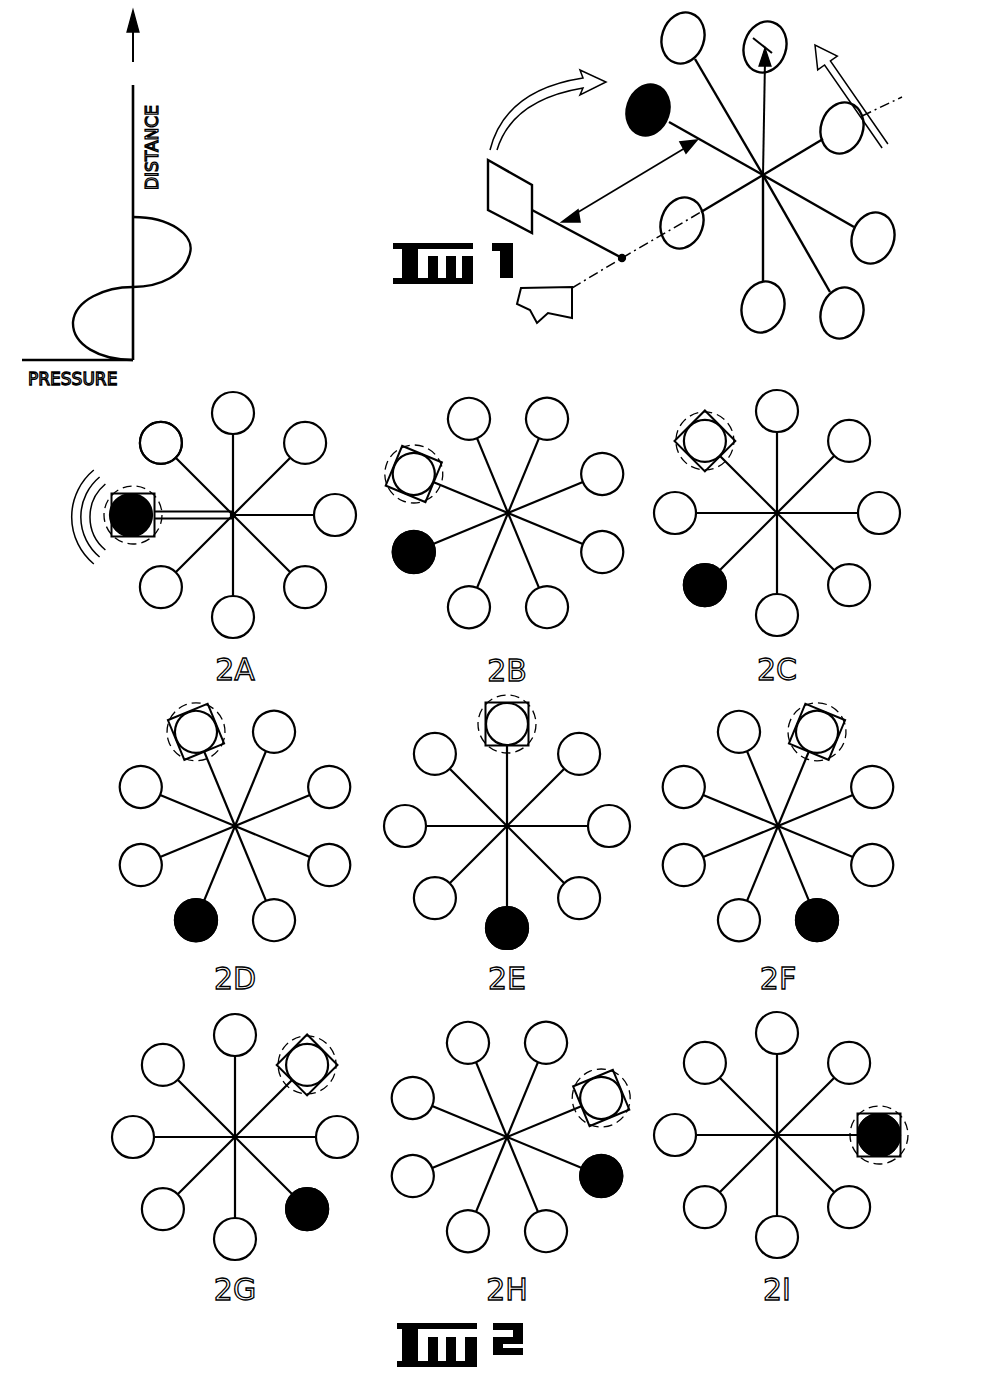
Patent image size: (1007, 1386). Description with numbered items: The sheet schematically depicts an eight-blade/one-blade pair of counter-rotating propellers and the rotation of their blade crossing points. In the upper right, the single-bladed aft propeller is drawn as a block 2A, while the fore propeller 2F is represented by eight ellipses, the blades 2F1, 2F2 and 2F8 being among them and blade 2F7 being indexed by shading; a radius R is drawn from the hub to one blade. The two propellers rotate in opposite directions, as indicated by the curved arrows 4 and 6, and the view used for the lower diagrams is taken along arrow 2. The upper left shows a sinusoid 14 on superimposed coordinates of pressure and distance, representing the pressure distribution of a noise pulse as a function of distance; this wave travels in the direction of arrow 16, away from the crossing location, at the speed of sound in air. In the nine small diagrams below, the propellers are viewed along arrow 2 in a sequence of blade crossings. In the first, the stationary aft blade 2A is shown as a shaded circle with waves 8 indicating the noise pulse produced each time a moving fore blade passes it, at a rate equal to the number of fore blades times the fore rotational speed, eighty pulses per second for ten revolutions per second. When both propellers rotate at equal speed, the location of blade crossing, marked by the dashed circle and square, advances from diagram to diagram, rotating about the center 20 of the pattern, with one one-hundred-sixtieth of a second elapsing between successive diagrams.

In FIG. 1, the arrow 16 is at (132, 45).
In FIG. 1, the sinusoid 14 is at (191, 253).
In FIG. 1, the arrow 4 is at (492, 118).
In FIG. 1, the aft propeller 2A is at (522, 173).
In FIG. 2, the aft propeller 2A is at (110, 540).
In FIG. 1, the fore propeller blade 2F8 is at (663, 49).
In FIG. 2, the fore propeller blade 2F8 is at (158, 421).
In FIG. 1, the fore propeller blade 2F7 is at (637, 131).
In FIG. 1, the fore propeller blade 2F1 is at (786, 57).
In FIG. 1, the fore propeller blade 2F2 is at (846, 156).
In FIG. 1, the fore propeller 2F is at (723, 58).
In FIG. 1, the radius vector R is at (764, 104).
In FIG. 1, the arrow 6 is at (862, 75).
In FIG. 1, the arrow 2 is at (544, 305).
In FIG. 2, the waves 8 is at (78, 492).
In FIG. 2, the center 20 is at (243, 512).